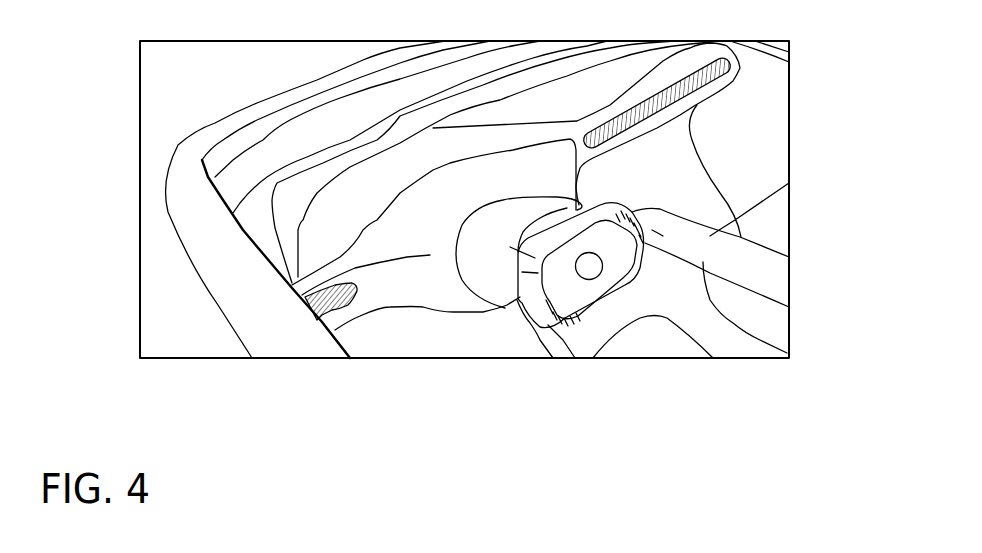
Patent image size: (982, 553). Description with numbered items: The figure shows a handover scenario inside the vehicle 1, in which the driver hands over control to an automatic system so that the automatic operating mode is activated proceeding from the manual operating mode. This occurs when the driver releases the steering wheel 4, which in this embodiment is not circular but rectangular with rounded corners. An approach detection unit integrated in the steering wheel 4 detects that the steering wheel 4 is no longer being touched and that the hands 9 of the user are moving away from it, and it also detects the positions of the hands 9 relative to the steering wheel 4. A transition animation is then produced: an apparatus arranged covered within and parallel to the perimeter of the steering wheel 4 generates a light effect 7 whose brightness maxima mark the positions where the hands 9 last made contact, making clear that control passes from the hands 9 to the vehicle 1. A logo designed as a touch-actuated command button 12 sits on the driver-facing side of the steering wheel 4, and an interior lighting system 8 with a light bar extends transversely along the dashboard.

The vehicle 1 is at (148, 121).
The steering wheel 4 is at (628, 254).
The light effect 7 is at (628, 228).
The interior lighting system 8 is at (330, 302).
The hands 9 is at (658, 241).
The command button 12 is at (593, 267).